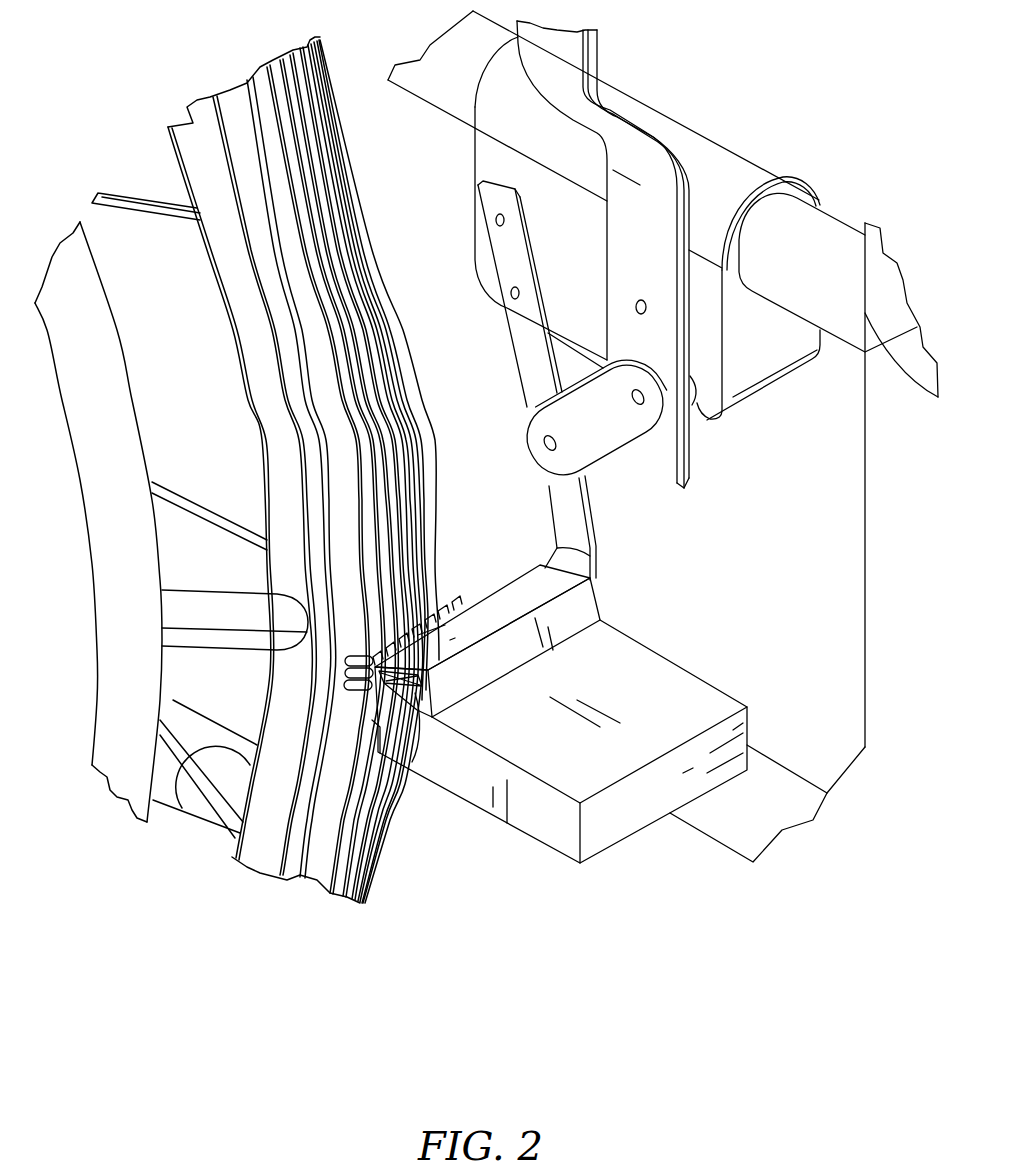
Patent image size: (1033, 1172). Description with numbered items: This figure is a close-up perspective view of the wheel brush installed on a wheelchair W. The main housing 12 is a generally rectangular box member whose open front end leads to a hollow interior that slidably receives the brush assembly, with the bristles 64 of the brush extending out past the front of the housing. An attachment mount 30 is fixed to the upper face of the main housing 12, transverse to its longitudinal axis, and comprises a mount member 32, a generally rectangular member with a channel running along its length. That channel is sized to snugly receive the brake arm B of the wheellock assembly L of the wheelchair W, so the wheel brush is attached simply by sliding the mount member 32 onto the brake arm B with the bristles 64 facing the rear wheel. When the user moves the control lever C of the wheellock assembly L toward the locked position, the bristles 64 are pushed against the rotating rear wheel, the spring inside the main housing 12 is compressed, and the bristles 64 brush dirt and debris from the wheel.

The main housing 12 is at (548, 812).
The attachment mount 30 is at (600, 600).
The mount member 32 is at (520, 600).
The bristles 64 is at (468, 600).
The brake arm B is at (406, 702).
The control lever C is at (523, 243).
The wheellock assembly L is at (606, 412).
The wheelchair W is at (840, 225).